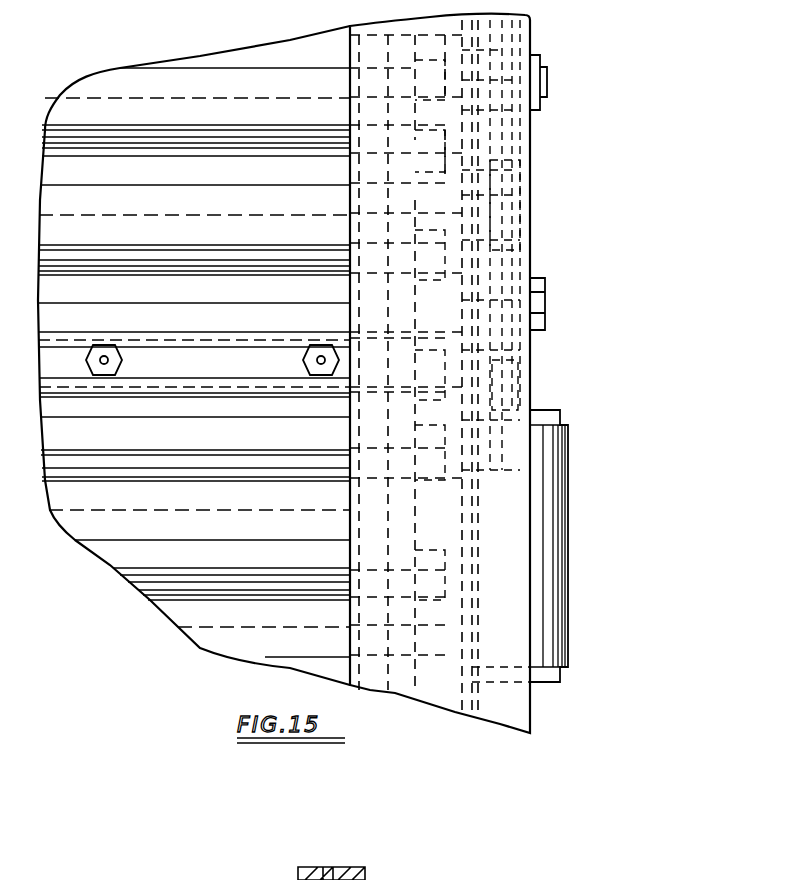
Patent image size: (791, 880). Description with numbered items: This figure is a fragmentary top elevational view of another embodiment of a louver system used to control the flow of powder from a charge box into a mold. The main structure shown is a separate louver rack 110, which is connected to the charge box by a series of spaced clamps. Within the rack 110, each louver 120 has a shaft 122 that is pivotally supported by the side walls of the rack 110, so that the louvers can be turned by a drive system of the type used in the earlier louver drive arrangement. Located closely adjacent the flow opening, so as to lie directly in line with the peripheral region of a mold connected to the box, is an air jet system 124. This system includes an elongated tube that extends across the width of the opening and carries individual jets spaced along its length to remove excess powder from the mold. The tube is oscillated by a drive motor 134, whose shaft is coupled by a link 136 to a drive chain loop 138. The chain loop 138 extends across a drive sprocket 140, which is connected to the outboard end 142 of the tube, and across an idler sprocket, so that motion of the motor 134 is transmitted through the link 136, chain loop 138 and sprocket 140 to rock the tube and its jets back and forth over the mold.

The louver rack 110 is at (534, 171).
The louver 120 is at (95, 573).
The shaft 122 is at (193, 470).
The air jet system 124 is at (283, 357).
The drive motor 134 is at (557, 564).
The link 136 is at (546, 315).
The drive chain loop 138 is at (535, 244).
The drive sprocket 140 is at (531, 376).
The outboard end 142 is at (537, 126).